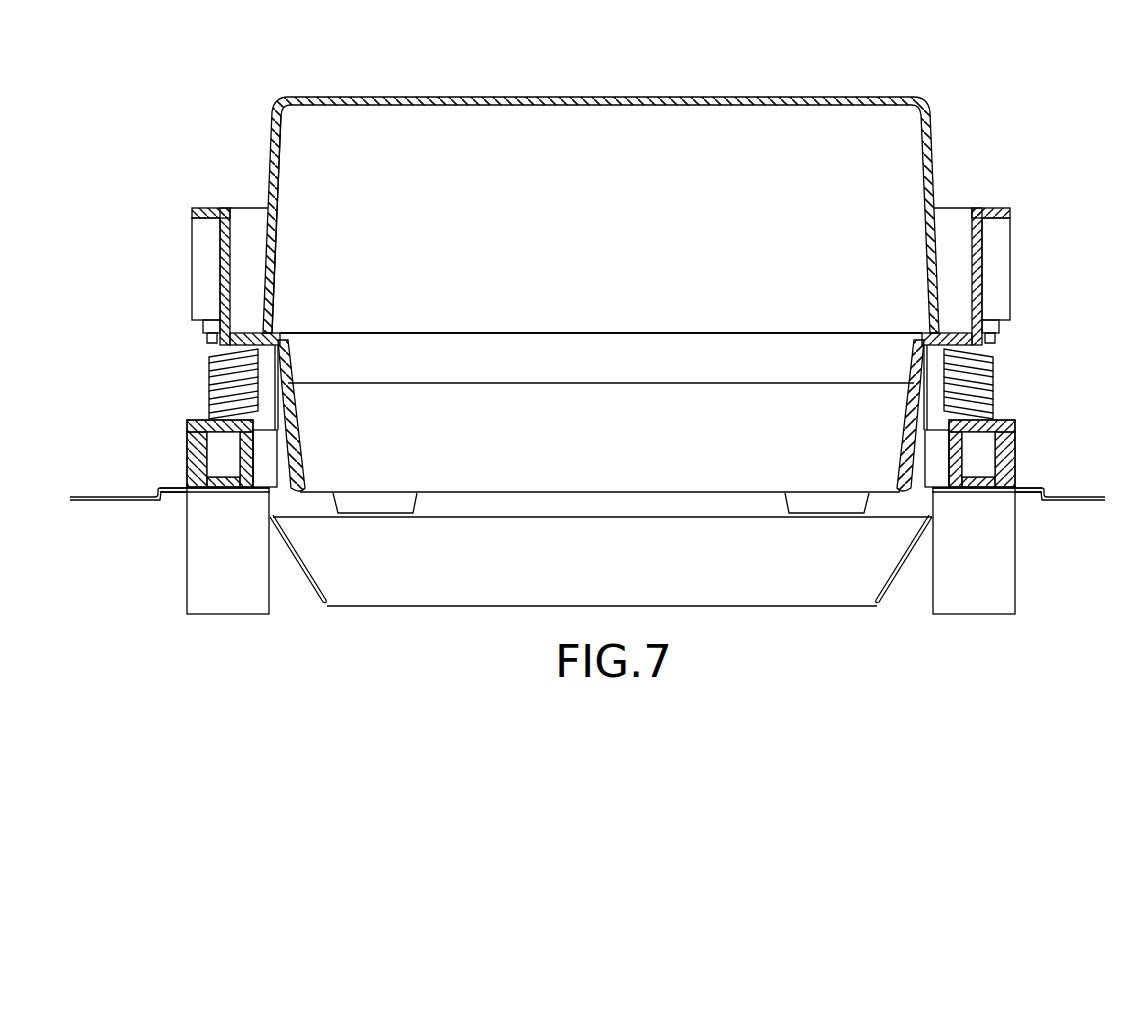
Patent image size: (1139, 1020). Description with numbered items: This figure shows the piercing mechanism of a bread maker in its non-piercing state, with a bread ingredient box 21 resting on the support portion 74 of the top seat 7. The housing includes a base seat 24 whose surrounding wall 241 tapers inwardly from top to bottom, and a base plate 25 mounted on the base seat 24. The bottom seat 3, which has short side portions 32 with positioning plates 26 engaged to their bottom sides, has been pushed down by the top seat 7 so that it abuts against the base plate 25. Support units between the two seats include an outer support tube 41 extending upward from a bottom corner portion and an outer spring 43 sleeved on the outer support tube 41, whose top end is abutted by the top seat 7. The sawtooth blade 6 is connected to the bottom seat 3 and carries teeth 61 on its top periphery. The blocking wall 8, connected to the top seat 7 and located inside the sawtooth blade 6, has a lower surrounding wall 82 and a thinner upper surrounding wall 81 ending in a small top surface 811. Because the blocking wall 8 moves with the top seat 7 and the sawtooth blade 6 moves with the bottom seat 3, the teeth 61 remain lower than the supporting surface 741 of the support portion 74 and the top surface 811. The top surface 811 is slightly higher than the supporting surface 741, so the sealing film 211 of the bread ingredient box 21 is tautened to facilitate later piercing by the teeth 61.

The bottom seat 3 is at (1012, 457).
The sawtooth blade 6 is at (956, 284).
The top seat 7 is at (190, 264).
The blocking wall 8 is at (601, 258).
The bread ingredient box 21 is at (760, 97).
The base seat 24 is at (970, 583).
The base plate 25 is at (1100, 495).
The positioning plate 26 is at (222, 490).
The short side portion 32 is at (592, 432).
The outer support tube 41 is at (215, 357).
The outer spring 43 is at (210, 380).
The teeth 61 is at (940, 335).
The support portion 74 is at (240, 340).
The upper surrounding wall 81 is at (640, 360).
The lower surrounding wall 82 is at (567, 400).
The sealing film 211 is at (778, 340).
The surrounding wall 241 is at (906, 557).
The top supporting surface 741 is at (247, 337).
The top surface 811 is at (292, 345).